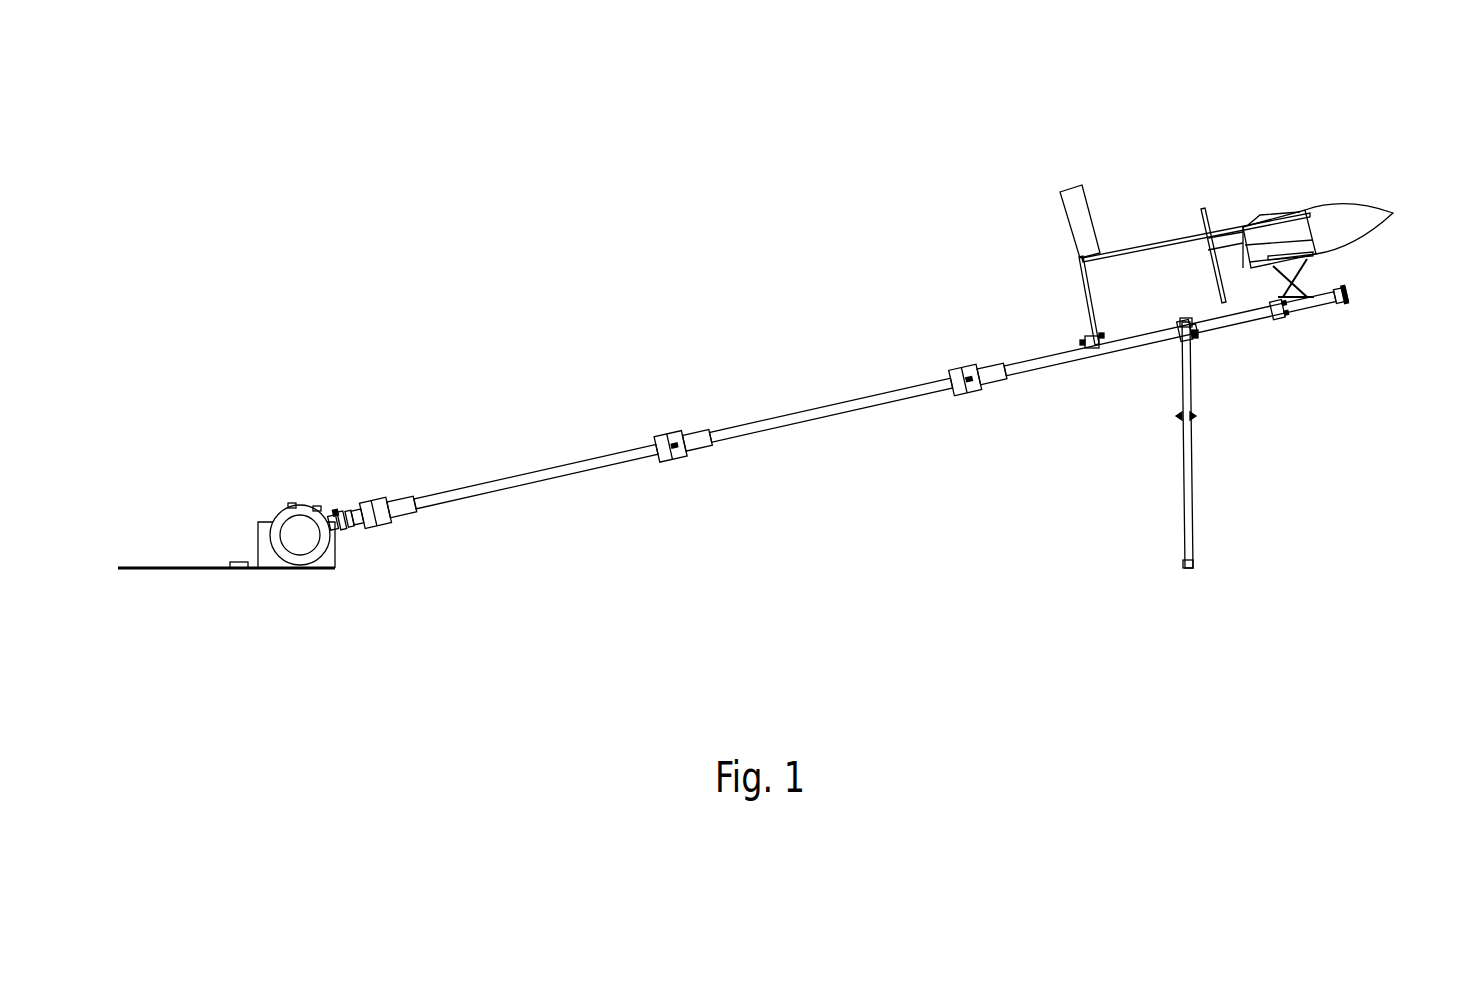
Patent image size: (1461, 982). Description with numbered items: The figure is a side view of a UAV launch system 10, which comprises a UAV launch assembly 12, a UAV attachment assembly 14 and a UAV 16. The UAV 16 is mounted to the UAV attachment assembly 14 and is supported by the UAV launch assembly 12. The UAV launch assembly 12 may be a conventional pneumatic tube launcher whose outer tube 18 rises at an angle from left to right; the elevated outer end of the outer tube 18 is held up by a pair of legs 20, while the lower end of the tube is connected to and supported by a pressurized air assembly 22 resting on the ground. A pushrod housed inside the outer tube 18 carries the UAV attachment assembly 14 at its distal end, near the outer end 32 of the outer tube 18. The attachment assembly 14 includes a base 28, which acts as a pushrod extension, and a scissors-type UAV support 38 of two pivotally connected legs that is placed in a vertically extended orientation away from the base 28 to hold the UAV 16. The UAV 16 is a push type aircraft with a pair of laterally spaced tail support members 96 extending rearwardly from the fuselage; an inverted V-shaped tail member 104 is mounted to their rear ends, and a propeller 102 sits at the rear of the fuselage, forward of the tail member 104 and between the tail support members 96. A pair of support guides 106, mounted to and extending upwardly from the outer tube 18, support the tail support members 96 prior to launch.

The UAV launch system 10 is at (668, 182).
The UAV launch assembly 12 is at (683, 388).
The UAV attachment assembly 14 is at (1360, 296).
The UAV 16 is at (1364, 194).
The outer tube 18 is at (803, 424).
The legs 20 is at (1193, 493).
The pressurized air assembly 22 is at (273, 495).
The base 28 is at (1328, 308).
The outer end 32 is at (1248, 323).
The scissors-type UAV support 38 is at (1325, 268).
The tail support members 96 is at (1148, 254).
The propeller 102 is at (1200, 207).
The tail member 104 is at (1063, 210).
The support guides 106 is at (1080, 288).